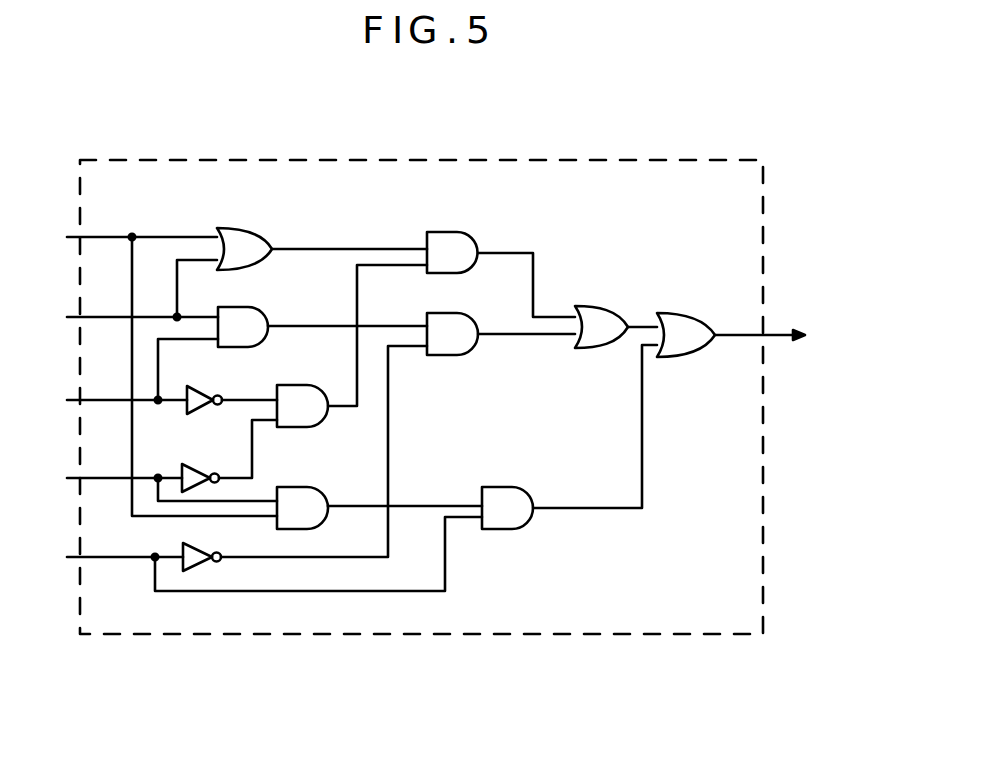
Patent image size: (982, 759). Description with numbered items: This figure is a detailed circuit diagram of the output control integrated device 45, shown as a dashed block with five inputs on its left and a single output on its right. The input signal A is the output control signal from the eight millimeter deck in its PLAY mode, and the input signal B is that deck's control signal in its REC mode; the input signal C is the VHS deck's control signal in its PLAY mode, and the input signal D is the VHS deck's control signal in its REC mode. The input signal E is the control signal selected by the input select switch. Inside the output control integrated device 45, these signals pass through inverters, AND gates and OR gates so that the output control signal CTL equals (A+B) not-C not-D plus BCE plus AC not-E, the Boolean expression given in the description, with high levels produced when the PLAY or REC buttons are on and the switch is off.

The output control integrated device 45 is at (743, 172).
The input signal A is at (118, 241).
The input signal B is at (119, 320).
The input signal C is at (104, 401).
The input signal D is at (102, 480).
The input signal E is at (103, 561).
The output control signal CTL is at (806, 338).